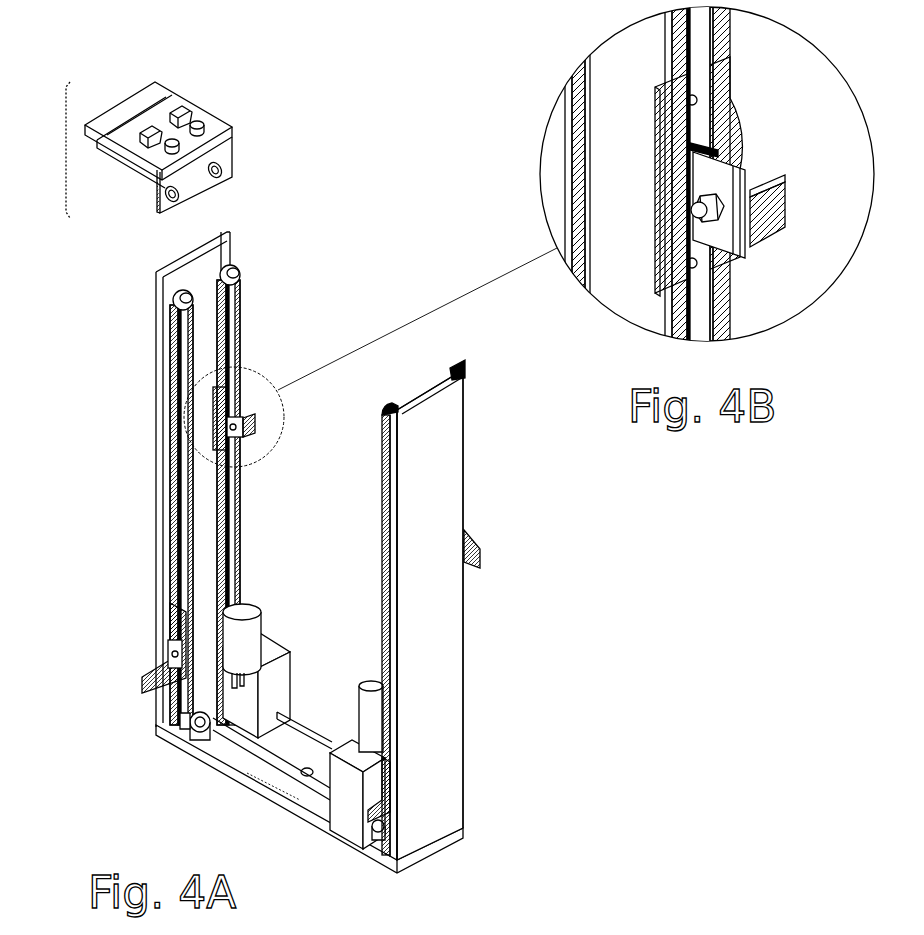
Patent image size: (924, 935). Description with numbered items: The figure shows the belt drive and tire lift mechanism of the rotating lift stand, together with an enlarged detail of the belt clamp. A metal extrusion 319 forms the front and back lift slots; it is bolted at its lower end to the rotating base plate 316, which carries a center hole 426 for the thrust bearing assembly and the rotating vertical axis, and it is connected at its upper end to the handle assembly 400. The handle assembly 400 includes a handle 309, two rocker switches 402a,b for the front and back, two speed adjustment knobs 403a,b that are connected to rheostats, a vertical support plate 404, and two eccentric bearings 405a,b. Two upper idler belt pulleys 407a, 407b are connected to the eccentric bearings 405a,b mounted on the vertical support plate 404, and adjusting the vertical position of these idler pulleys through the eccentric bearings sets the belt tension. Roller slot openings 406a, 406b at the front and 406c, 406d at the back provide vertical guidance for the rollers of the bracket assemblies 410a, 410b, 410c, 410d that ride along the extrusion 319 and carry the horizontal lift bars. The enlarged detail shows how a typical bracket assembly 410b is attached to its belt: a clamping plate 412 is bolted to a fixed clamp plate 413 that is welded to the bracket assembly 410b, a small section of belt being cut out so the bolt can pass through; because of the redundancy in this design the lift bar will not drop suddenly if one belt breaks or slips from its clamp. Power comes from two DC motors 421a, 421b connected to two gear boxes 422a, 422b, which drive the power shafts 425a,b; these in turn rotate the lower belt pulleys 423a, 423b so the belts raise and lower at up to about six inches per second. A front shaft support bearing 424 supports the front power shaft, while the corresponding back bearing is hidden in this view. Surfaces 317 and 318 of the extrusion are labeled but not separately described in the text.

In FIG. 4A, the handle assembly 400 is at (45, 150).
In FIG. 4A, the handle 309 is at (160, 100).
In FIG. 4A, the rocker switches 402a,b is at (152, 132).
In FIG. 4A, the speed adjustment knobs 403a,b is at (200, 127).
In FIG. 4A, the vertical support plate 404 is at (235, 160).
In FIG. 4A, the eccentric bearings 405a,b is at (178, 195).
In FIG. 4A, the roller slot opening 406a is at (165, 268).
In FIG. 4A, the roller slot opening 406b is at (400, 403).
In FIG. 4A, the roller slot opening 406c is at (224, 230).
In FIG. 4A, the roller slot opening 406d is at (458, 368).
In FIG. 4A, the upper idler belt pulley 407a is at (180, 303).
In FIG. 4A, the upper idler belt pulley 407b is at (240, 278).
In FIG. 4A, the bracket assembly 410a is at (150, 672).
In FIG. 4A, the bracket assembly 410b is at (250, 437).
In FIG. 4A, the bracket assembly 410c is at (476, 548).
In FIG. 4A, the bracket assembly 410d is at (365, 815).
In FIG. 4A, the DC motor 421a is at (375, 690).
In FIG. 4A, the DC motor 421b is at (245, 612).
In FIG. 4A, the gear box 422a is at (350, 752).
In FIG. 4A, the gear box 422b is at (276, 646).
In FIG. 4A, the lower belt pulley 423a is at (190, 734).
In FIG. 4A, the lower belt pulley 423b is at (380, 833).
In FIG. 4A, the front shaft support bearing 424 is at (206, 742).
In FIG. 4A, the power shafts 425a,b is at (280, 762).
In FIG. 4A, the center hole 426 is at (282, 795).
In FIG. 4A, the rotating base plate 316 is at (430, 850).
In FIG. 4A, the side plate lower portion 317 is at (405, 775).
In FIG. 4A, the side plate edge 318 is at (455, 690).
In FIG. 4A, the metal extrusion 319 is at (430, 720).
In FIG. 4B, the clamping plate 412 is at (737, 262).
In FIG. 4B, the fixed clamp plate 413 is at (742, 255).